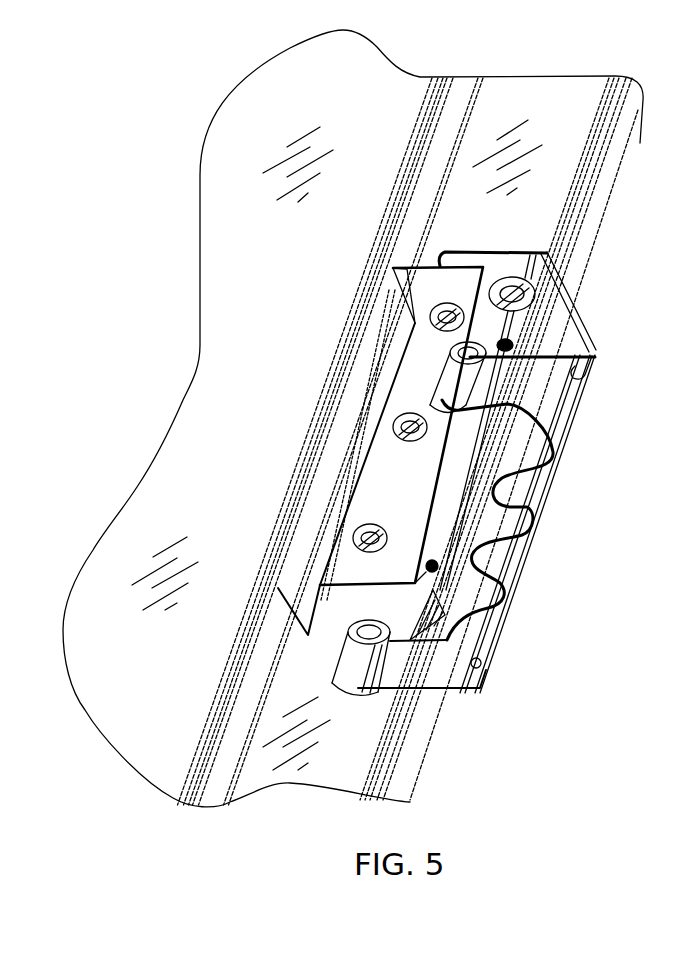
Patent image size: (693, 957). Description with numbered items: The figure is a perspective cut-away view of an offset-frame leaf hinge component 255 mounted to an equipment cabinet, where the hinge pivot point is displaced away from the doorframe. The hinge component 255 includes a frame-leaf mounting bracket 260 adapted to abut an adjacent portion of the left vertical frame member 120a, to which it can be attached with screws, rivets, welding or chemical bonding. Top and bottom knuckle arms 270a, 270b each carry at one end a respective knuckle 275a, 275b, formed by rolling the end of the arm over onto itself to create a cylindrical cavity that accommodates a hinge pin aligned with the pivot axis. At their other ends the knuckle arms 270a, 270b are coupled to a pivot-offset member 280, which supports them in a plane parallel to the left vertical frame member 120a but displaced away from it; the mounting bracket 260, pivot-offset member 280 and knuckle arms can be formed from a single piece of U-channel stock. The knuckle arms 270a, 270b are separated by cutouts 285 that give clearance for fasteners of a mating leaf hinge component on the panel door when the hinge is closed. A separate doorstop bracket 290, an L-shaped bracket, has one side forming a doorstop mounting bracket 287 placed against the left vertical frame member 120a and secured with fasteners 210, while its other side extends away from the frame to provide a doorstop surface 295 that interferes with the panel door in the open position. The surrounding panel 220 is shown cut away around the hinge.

The left vertical frame member 120a is at (548, 87).
The fasteners 210 is at (377, 520).
The door panel 220 is at (310, 77).
The offset-frame leaf hinge component 255 is at (546, 597).
The frame-leaf mounting bracket 260 is at (513, 267).
The top knuckle arm 270a is at (540, 397).
The bottom knuckle arm 270b is at (447, 660).
The knuckle 275a is at (480, 330).
The knuckle 275b is at (353, 690).
The pivot-offset member 280 is at (585, 328).
The cutouts 285 is at (508, 507).
The doorstop mounting bracket 287 is at (447, 277).
The doorstop bracket 290 is at (300, 627).
The doorstop surface 295 is at (350, 420).